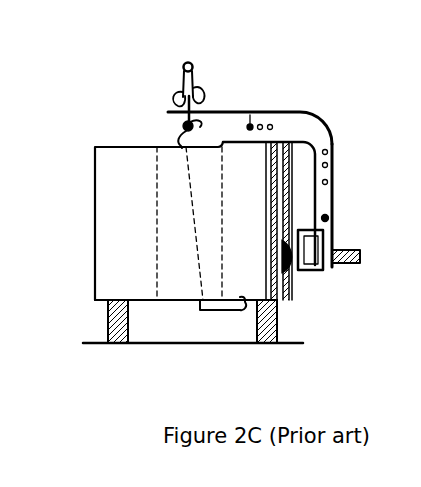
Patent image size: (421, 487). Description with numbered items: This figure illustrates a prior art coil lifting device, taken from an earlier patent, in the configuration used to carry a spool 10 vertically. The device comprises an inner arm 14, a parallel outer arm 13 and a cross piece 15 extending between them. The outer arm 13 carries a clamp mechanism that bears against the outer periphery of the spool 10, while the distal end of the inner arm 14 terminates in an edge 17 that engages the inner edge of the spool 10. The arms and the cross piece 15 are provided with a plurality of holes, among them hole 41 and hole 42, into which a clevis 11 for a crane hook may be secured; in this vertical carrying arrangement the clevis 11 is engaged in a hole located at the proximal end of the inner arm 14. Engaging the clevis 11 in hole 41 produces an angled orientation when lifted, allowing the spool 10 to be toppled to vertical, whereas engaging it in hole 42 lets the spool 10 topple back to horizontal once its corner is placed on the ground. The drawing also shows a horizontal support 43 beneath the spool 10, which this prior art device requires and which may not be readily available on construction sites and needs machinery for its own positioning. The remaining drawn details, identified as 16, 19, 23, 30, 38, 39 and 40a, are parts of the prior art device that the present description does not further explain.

The spool 10 is at (103, 265).
The clevis 11 is at (178, 88).
The outer arm 13 is at (336, 198).
The inner arm 14 is at (197, 228).
The cross piece 15 is at (248, 111).
The vertical guide 16 is at (158, 290).
The edge 17 is at (229, 306).
The roller / slide element 19 is at (279, 268).
The handle arm 23 is at (351, 264).
The clamp bracket 30 is at (318, 271).
The hook pivot 38 is at (176, 113).
The pin 39 is at (329, 218).
The hook flange 40a is at (204, 98).
The hole 41 is at (254, 122).
The hole 42 is at (330, 180).
The horizontal support 43 is at (108, 322).